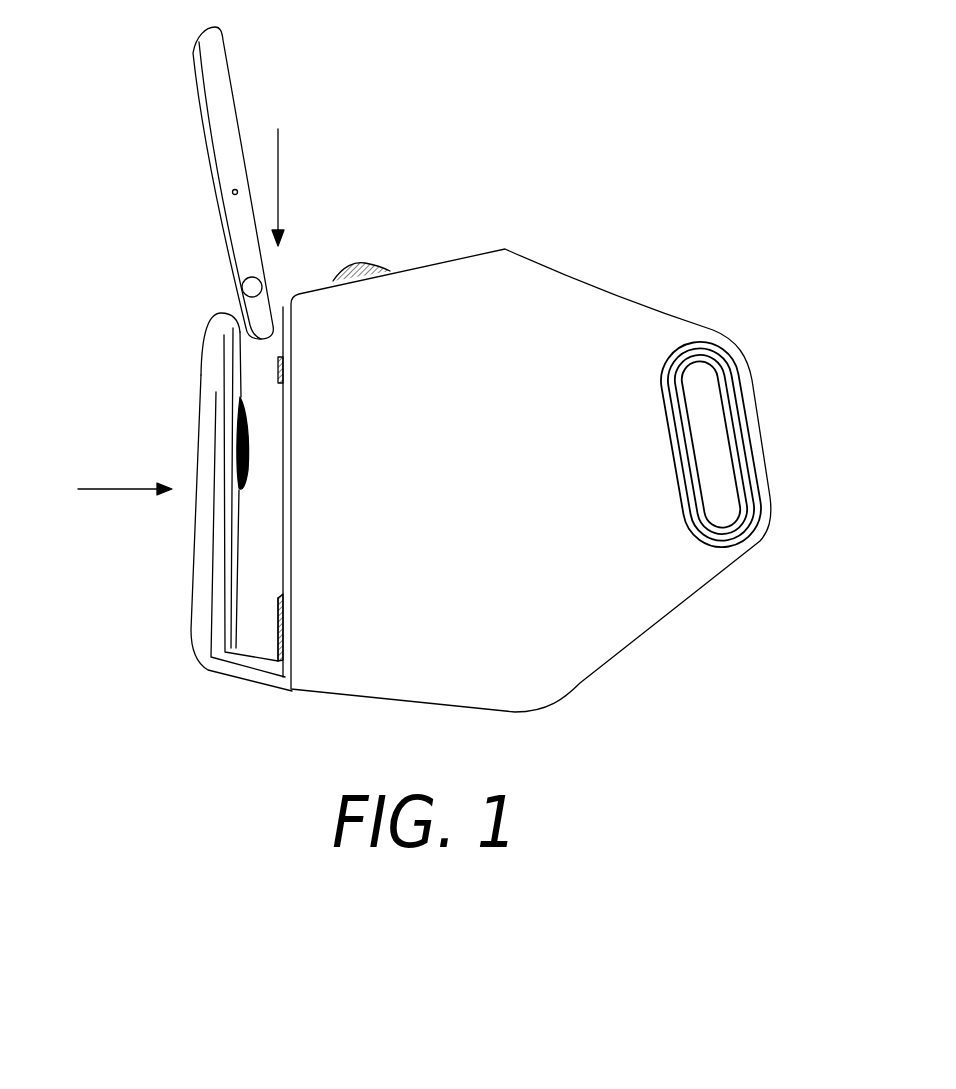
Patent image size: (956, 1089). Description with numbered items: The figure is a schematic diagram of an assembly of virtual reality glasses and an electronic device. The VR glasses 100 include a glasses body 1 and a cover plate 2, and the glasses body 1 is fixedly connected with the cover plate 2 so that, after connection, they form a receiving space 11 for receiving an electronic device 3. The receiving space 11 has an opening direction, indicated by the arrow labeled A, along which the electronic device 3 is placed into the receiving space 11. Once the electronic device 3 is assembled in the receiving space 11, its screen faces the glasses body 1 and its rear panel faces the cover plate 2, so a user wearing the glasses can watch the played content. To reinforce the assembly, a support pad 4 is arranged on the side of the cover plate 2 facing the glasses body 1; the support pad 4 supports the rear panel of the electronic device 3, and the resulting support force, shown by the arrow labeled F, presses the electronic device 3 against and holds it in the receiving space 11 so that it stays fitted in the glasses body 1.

The VR glasses 100 is at (434, 369).
The glasses body 1 is at (452, 290).
The cover plate 2 is at (179, 502).
The electronic device 3 is at (218, 120).
The support pad 4 is at (242, 445).
The receiving space 11 is at (240, 623).